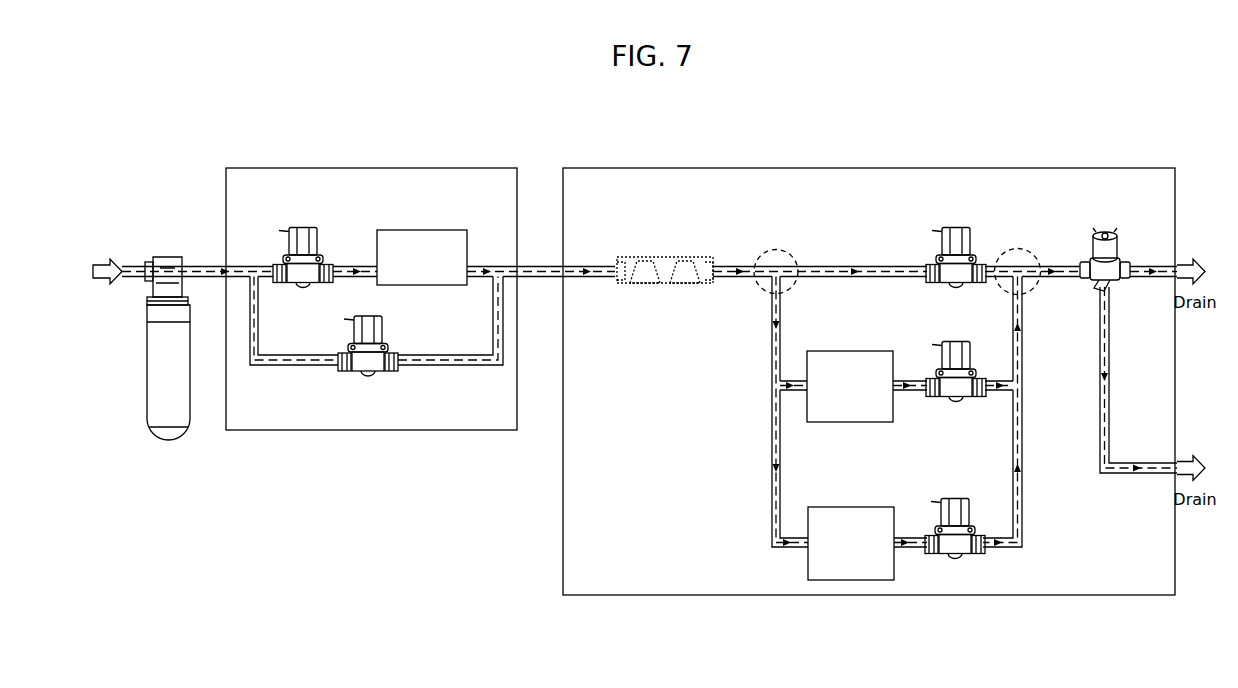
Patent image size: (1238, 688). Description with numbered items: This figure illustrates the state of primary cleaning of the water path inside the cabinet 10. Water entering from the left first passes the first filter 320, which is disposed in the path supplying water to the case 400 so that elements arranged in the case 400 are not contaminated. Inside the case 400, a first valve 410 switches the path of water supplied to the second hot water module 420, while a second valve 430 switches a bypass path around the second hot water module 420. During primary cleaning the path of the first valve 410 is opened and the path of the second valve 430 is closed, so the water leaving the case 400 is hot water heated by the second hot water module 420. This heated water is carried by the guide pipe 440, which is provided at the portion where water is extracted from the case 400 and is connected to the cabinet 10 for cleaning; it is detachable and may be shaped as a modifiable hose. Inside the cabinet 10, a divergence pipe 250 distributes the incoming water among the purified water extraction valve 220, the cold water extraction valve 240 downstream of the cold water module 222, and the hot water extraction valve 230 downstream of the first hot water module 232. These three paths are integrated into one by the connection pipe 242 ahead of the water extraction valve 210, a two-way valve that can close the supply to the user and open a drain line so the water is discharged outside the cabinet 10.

The cabinet 10 is at (1122, 168).
The water extraction valve 210 is at (1105, 235).
The purified water extraction valve 220 is at (967, 227).
The cold water module 222 is at (868, 351).
The hot water extraction valve 230 is at (967, 499).
The first hot water module 232 is at (868, 507).
The cold water extraction valve 240 is at (967, 342).
The connection pipe 242 is at (1022, 249).
The divergence pipe 250 is at (780, 250).
The first filter 320 is at (168, 441).
The case 400 is at (463, 168).
The first valve 410 is at (320, 241).
The second hot water module 420 is at (411, 230).
The second valve 430 is at (386, 330).
The guide pipe 440 is at (540, 266).